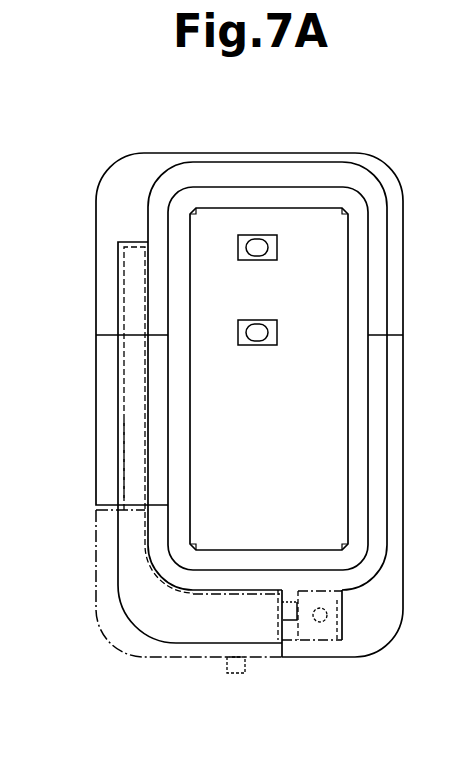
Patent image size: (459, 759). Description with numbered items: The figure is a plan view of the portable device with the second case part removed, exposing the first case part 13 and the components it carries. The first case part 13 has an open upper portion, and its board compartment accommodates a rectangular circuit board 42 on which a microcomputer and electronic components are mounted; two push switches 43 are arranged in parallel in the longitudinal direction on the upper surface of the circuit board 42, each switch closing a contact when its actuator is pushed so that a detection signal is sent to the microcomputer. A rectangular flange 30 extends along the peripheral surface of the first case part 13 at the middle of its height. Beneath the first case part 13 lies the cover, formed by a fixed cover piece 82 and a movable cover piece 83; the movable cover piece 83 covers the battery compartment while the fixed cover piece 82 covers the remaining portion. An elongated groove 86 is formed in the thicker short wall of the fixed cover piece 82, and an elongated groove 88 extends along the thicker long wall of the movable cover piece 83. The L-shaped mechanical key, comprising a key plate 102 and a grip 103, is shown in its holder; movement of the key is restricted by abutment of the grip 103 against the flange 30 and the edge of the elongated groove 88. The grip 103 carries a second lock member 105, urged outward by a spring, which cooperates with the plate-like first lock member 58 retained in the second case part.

The first case part 13 is at (285, 196).
The fixed cover piece 82 is at (97, 204).
The movable cover piece 83 is at (96, 407).
The elongated groove 86 is at (121, 290).
The key plate 102 is at (125, 359).
The elongated groove 88 is at (121, 446).
The circuit board 42 is at (330, 383).
The push switches 43 is at (277, 247).
The flange 30 is at (220, 582).
The grip 103 is at (168, 658).
The second lock member 105 is at (288, 622).
The first lock member 58 is at (332, 642).